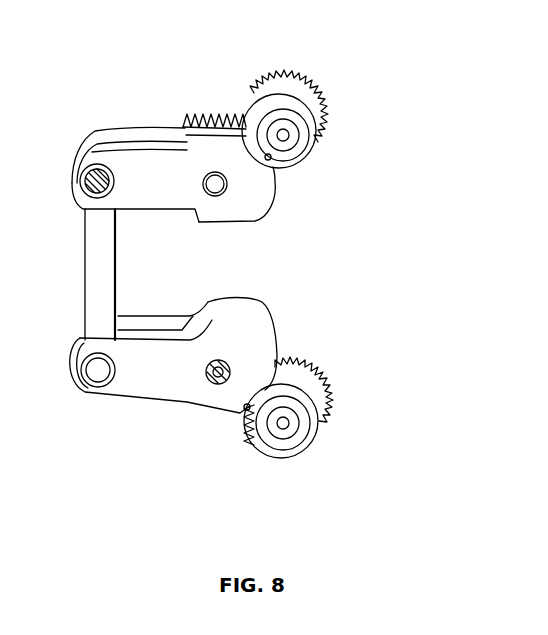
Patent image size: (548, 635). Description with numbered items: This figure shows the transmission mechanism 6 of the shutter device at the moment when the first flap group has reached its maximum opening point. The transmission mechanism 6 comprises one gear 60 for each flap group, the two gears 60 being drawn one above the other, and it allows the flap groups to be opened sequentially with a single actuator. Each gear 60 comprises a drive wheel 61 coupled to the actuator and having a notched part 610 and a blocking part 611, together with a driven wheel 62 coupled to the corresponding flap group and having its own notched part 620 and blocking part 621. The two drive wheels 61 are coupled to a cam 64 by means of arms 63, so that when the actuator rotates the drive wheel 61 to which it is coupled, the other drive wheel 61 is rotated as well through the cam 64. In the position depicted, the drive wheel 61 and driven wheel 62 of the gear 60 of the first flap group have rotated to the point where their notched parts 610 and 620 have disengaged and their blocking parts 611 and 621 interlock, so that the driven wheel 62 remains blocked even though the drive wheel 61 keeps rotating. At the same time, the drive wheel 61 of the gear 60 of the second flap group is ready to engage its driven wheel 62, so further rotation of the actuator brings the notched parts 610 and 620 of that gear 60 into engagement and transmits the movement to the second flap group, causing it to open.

The transmission mechanism 6 is at (429, 205).
The gear 60 is at (145, 69).
The drive wheel 61 is at (206, 194).
The notched part 610 is at (223, 112).
The blocking part 611 is at (274, 200).
The driven wheel 62 is at (297, 133).
The notched part 620 is at (250, 87).
The blocking part 621 is at (268, 157).
The arm 63 is at (157, 175).
The cam 64 is at (102, 268).